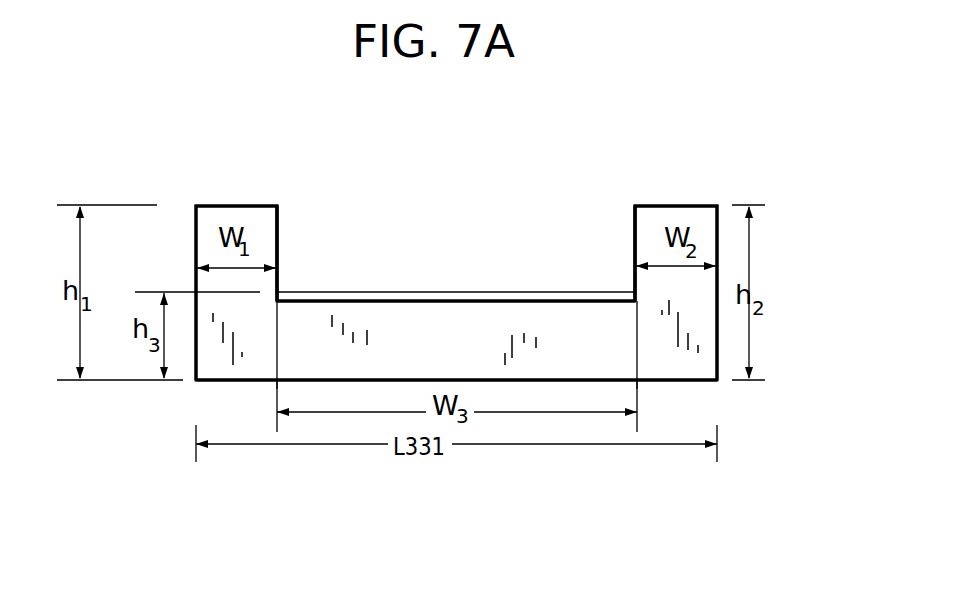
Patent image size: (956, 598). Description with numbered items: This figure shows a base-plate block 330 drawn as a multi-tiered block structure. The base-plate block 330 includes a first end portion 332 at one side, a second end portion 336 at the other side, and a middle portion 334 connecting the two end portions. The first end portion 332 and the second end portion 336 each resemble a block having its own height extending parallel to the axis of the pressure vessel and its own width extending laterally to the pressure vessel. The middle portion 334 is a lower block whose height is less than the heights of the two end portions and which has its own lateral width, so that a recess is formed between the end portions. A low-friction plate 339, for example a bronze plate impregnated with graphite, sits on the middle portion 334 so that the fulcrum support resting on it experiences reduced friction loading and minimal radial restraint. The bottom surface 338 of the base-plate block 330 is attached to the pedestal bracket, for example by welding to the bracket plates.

The base-plate block 330 is at (782, 219).
The first end portion 332 is at (278, 186).
The middle portion 334 is at (632, 186).
The second end portion 336 is at (716, 186).
The bottom surface 338 is at (668, 386).
The low-friction plate 339 is at (484, 291).